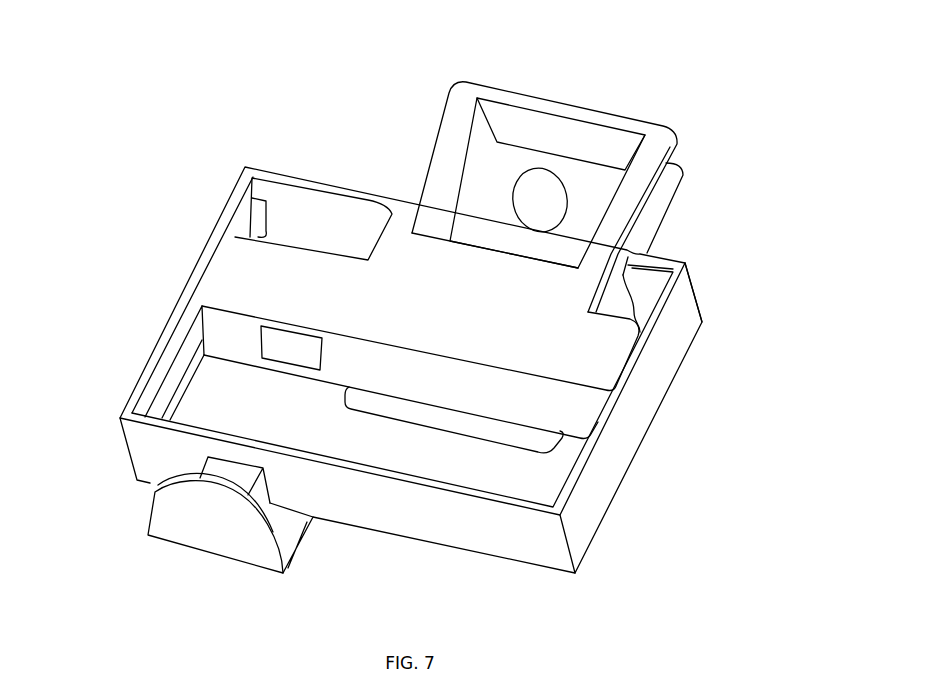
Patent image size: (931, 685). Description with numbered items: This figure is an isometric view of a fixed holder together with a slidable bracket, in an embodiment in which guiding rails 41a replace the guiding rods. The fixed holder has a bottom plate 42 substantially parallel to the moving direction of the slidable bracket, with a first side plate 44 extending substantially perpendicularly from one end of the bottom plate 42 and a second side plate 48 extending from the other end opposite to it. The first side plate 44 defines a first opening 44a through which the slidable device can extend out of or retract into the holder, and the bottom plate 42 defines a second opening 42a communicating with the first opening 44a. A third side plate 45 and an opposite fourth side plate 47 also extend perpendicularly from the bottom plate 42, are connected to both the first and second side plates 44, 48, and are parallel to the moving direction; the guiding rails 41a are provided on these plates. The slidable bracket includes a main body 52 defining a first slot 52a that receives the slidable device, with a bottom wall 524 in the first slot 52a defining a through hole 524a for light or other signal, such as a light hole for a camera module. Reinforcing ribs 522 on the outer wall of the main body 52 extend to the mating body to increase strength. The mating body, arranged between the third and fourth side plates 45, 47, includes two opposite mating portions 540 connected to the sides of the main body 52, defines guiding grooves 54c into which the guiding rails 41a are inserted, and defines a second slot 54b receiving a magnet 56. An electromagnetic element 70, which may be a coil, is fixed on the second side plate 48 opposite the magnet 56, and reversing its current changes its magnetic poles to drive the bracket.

The bottom plate 42 is at (540, 465).
The second opening 42a is at (410, 413).
The first side plate 44 is at (318, 213).
The first opening 44a is at (630, 302).
The guiding rails 41a is at (254, 192).
The third side plate 45 is at (210, 273).
The fourth side plate 47 is at (633, 407).
The second side plate 48 is at (432, 505).
The main body 52 is at (641, 173).
The first slot 52a is at (502, 122).
The reinforcing ribs 522 is at (652, 206).
The bottom wall 524 is at (507, 165).
The through hole 524a is at (562, 177).
The mating portions 540 is at (235, 322).
The second slot 54b is at (203, 342).
The guiding grooves 54c is at (197, 353).
The magnet 56 is at (282, 340).
The electromagnetic element 70 is at (185, 466).